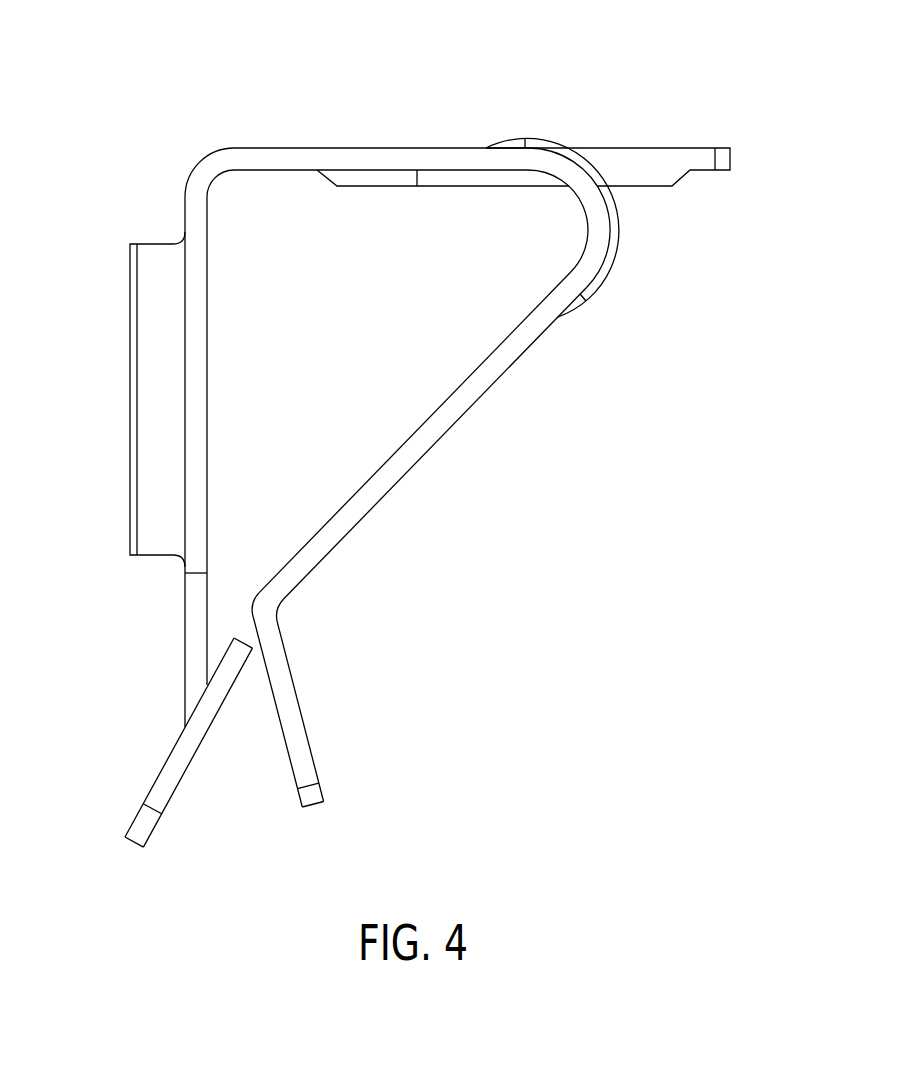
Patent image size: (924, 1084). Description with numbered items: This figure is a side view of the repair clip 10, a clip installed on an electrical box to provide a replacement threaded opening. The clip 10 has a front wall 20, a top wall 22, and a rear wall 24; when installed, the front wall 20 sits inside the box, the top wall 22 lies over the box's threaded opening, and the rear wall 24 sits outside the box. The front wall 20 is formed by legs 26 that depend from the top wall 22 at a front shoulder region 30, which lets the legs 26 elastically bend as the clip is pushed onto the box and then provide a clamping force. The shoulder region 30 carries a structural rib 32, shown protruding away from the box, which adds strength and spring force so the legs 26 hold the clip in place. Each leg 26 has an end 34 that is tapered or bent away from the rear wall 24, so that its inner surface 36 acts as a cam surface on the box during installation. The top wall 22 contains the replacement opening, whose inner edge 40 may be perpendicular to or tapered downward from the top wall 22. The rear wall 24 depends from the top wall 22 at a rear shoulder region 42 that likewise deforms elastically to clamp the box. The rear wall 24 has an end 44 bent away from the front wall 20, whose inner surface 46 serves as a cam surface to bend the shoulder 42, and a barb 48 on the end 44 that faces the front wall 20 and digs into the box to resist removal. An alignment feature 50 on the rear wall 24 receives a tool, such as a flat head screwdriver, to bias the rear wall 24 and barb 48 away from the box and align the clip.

The repair clip 10 is at (850, 122).
The front wall 20 is at (395, 573).
The top wall 22 is at (262, 157).
The rear wall 24 is at (195, 625).
The leg 26 is at (425, 438).
The front shoulder region 30 is at (604, 224).
The structural rib 32 is at (612, 222).
The end 34 is at (313, 808).
The inner surface 36 is at (293, 735).
The inner edge 40 is at (357, 187).
The rear shoulder region 42 is at (200, 172).
The end 44 is at (135, 828).
The inner surface 46 is at (161, 708).
The barb 48 is at (228, 645).
The alignment feature 50 is at (148, 322).